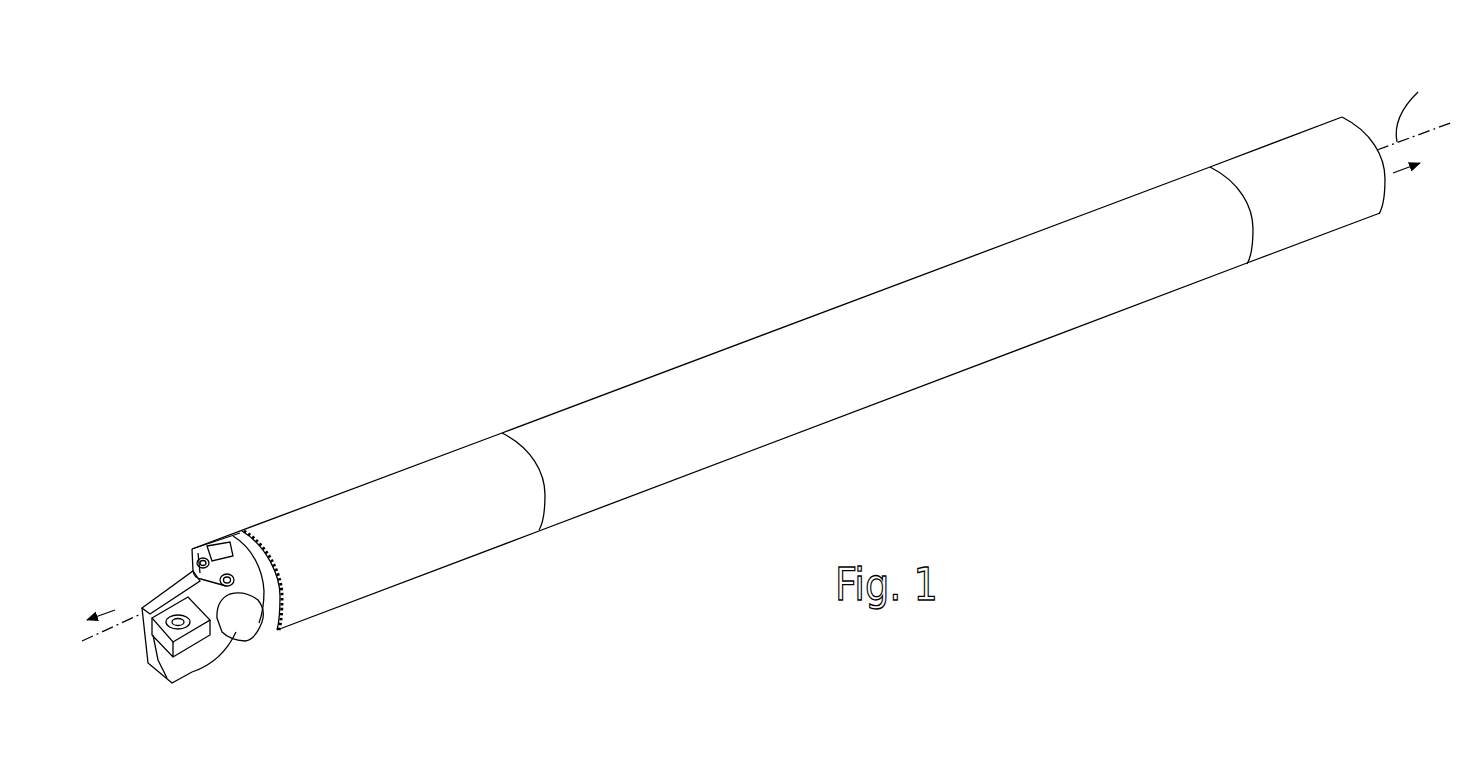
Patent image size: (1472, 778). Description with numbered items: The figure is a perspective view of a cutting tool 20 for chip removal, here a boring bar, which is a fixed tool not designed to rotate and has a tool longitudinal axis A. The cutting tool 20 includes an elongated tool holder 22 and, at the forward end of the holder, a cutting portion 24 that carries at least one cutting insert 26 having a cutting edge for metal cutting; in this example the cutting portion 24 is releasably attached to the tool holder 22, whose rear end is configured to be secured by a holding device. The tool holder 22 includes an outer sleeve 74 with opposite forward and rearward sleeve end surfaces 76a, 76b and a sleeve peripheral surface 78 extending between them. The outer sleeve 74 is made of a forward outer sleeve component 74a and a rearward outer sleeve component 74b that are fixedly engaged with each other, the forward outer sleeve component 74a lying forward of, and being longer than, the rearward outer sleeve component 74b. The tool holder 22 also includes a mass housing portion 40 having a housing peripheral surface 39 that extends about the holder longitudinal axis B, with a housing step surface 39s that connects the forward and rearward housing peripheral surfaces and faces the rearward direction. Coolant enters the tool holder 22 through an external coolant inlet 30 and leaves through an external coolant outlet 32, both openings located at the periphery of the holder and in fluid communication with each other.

The cutting tool 20 is at (500, 247).
The tool holder 22 is at (802, 268).
The cutting portion 24 is at (170, 523).
The cutting insert 26 is at (160, 660).
The external coolant inlet 30 is at (1380, 108).
The external coolant outlet 32 is at (273, 630).
The housing peripheral surface 39 is at (382, 508).
The housing step surface 39s is at (530, 457).
The mass housing portion 40 is at (422, 598).
The outer sleeve 74 is at (955, 403).
The forward outer sleeve component 74a is at (1077, 343).
The rearward outer sleeve component 74b is at (1298, 278).
The forward sleeve end surface 76a is at (538, 532).
The rearward sleeve end surface 76b is at (1387, 185).
The sleeve peripheral surface 78 is at (1012, 263).